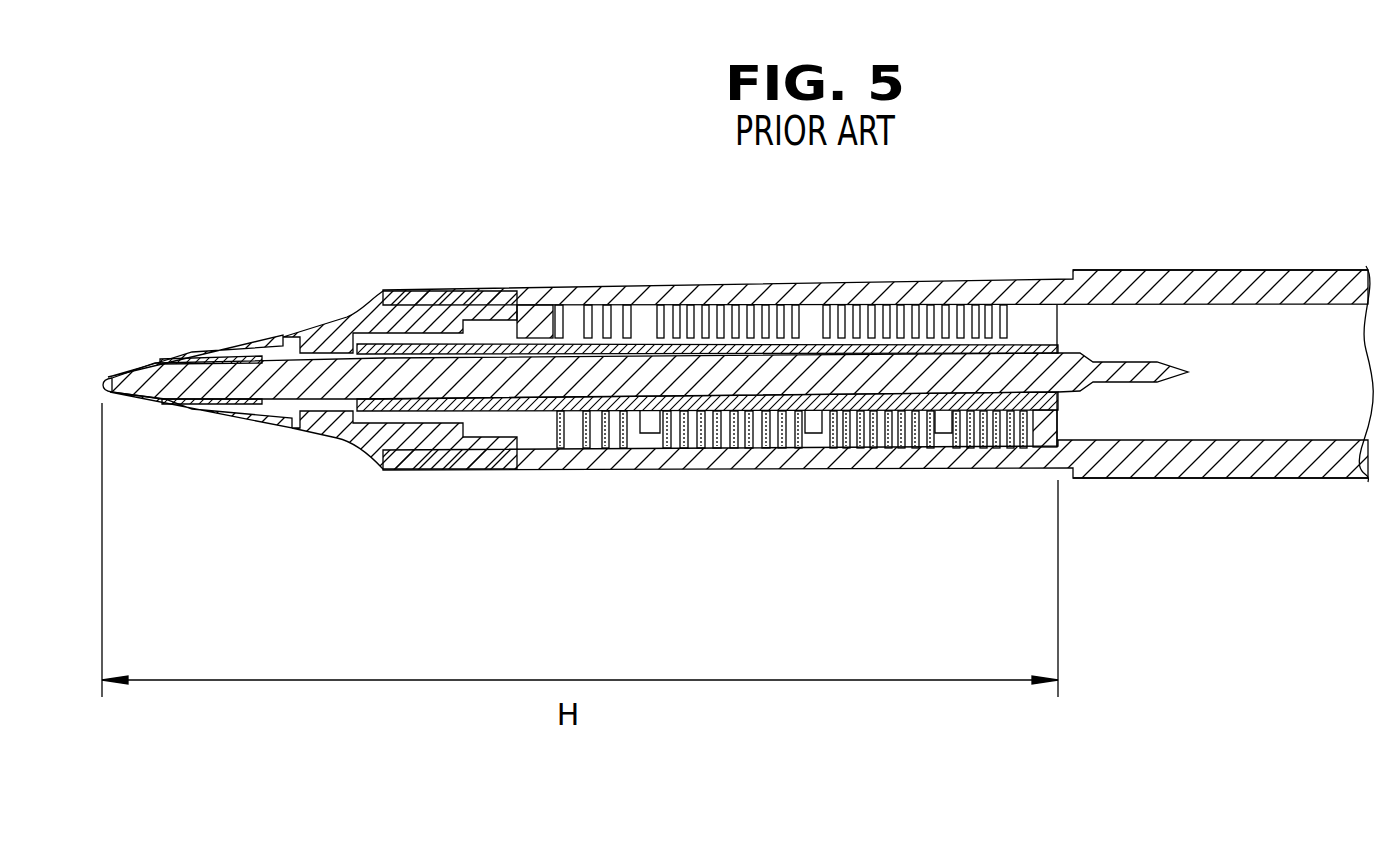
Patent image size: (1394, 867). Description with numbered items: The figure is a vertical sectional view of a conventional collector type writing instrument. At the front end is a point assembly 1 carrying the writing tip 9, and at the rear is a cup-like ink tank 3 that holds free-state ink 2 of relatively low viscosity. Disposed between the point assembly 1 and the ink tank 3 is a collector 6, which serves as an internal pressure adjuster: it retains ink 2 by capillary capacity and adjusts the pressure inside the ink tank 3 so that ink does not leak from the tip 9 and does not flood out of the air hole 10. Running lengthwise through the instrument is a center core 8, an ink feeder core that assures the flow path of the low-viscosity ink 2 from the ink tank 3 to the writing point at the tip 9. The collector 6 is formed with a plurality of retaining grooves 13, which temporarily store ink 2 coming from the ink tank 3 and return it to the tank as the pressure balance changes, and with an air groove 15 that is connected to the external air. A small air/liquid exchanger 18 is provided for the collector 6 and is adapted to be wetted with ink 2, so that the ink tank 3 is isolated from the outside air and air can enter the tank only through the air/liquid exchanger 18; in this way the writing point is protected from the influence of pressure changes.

The point assembly 1 is at (175, 352).
The ink 2 is at (1332, 323).
The ink tank 3 is at (1228, 275).
The collector 6 is at (820, 435).
The center core 8 is at (335, 390).
The tip 9 is at (104, 377).
The air hole 10 is at (285, 336).
The retaining grooves 13 is at (630, 318).
The air groove 15 is at (940, 438).
The air/liquid exchanger 18 is at (1034, 318).